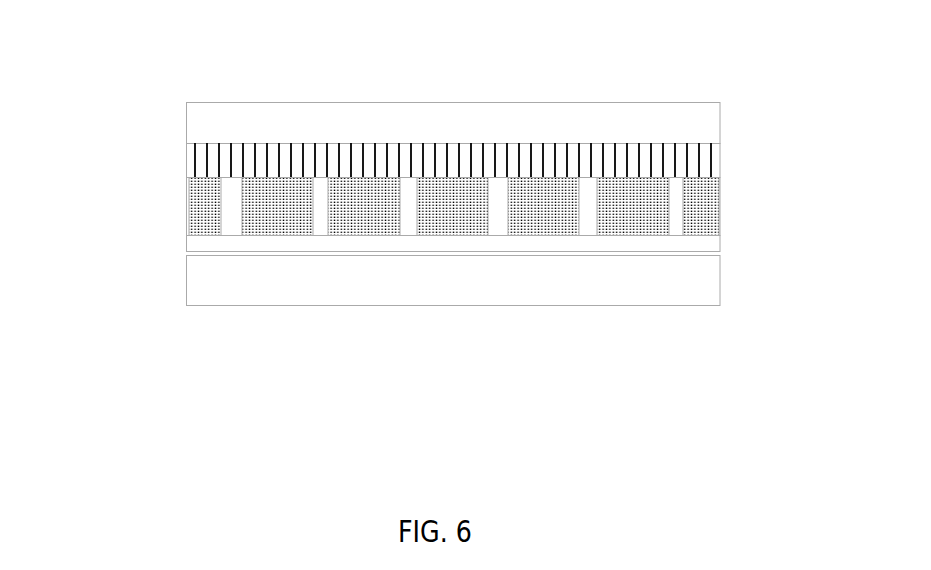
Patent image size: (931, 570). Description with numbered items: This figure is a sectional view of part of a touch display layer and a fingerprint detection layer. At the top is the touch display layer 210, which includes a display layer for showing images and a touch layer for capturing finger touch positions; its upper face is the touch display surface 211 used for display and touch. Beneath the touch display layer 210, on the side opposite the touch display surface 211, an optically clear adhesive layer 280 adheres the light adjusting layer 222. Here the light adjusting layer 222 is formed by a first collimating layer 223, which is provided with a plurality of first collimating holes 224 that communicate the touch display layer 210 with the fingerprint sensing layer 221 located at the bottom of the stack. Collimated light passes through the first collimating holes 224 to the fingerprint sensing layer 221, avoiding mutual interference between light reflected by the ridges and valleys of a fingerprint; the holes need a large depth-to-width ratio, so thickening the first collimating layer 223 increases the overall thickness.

The touch display layer 210 is at (442, 118).
The touch display surface 211 is at (570, 102).
The optically clear adhesive layer 280 is at (272, 162).
The light adjusting layer 222 is at (178, 199).
The first collimating hole 224 is at (675, 198).
The first collimating layer 223 is at (720, 204).
The fingerprint sensing layer 221 is at (517, 282).